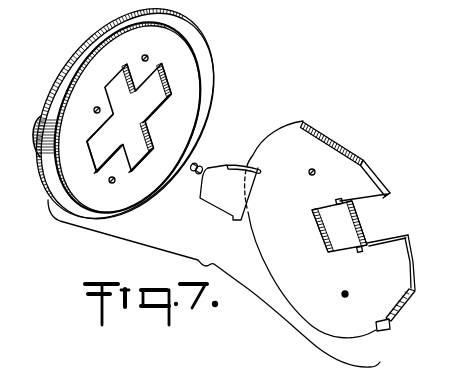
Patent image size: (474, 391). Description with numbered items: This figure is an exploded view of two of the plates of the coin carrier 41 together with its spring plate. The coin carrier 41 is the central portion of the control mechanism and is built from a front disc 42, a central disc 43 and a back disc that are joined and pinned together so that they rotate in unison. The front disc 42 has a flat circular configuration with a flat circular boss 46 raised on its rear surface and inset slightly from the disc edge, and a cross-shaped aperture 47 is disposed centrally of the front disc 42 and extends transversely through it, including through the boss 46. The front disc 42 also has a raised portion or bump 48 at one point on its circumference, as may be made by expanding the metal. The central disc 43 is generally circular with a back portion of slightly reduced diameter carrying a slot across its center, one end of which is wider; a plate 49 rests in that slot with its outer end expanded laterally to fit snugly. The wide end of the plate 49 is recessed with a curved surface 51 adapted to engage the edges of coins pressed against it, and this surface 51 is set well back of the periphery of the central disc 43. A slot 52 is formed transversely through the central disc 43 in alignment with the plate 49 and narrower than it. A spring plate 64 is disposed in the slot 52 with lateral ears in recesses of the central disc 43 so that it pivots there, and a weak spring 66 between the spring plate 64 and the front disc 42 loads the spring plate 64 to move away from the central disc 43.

The coin carrier 41 is at (268, 90).
The front disc 42 is at (97, 36).
The central disc 43 is at (305, 124).
The boss 46 is at (199, 88).
The cross-shaped aperture 47 is at (86, 151).
The bump 48 is at (36, 141).
The plate 49 is at (351, 235).
The curved surface 51 is at (368, 234).
The slot 52 is at (318, 240).
The spring plate 64 is at (212, 205).
The spring 66 is at (200, 164).